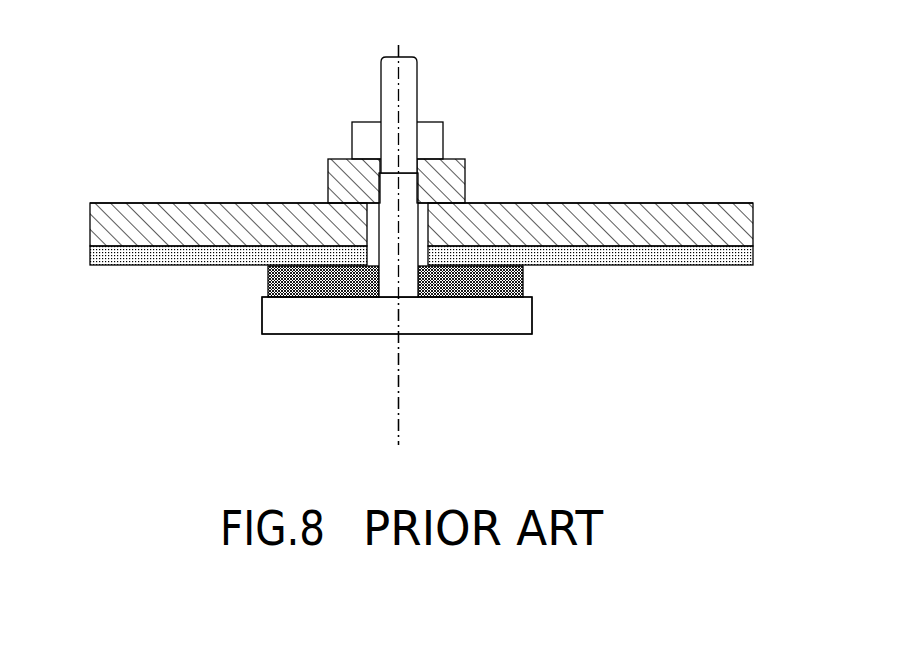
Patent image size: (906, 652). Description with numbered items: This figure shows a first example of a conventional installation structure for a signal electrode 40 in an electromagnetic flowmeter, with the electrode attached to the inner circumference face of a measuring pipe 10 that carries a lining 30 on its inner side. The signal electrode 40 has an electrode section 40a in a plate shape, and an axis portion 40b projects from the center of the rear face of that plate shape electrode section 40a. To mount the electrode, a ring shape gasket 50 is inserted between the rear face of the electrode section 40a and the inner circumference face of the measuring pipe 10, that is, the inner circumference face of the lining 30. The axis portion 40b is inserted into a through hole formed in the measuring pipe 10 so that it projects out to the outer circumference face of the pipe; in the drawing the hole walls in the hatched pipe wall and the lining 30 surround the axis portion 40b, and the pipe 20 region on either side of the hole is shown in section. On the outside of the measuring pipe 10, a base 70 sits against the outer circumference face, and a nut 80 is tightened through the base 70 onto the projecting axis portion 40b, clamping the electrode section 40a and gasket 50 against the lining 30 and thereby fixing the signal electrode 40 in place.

The measuring pipe 10 is at (150, 203).
The panel 20 is at (690, 203).
The lining 30 is at (700, 262).
The signal electrode 40 is at (503, 334).
The electrode section 40a is at (337, 322).
The axis portion 40b is at (417, 77).
The gasket 50 is at (267, 282).
The base 70 is at (466, 178).
The nut 80 is at (353, 130).